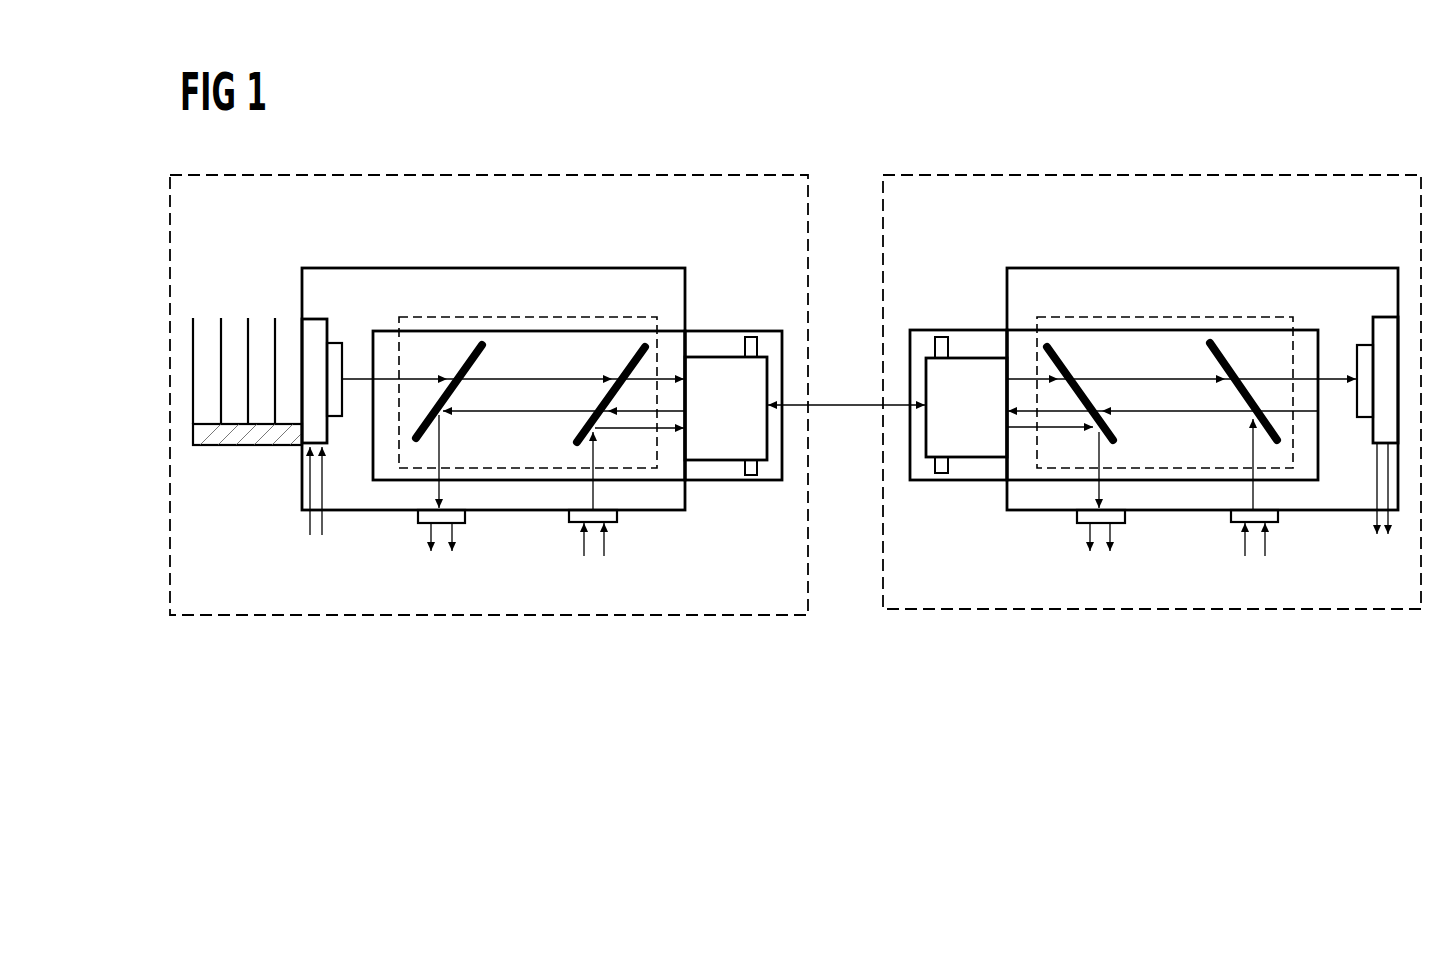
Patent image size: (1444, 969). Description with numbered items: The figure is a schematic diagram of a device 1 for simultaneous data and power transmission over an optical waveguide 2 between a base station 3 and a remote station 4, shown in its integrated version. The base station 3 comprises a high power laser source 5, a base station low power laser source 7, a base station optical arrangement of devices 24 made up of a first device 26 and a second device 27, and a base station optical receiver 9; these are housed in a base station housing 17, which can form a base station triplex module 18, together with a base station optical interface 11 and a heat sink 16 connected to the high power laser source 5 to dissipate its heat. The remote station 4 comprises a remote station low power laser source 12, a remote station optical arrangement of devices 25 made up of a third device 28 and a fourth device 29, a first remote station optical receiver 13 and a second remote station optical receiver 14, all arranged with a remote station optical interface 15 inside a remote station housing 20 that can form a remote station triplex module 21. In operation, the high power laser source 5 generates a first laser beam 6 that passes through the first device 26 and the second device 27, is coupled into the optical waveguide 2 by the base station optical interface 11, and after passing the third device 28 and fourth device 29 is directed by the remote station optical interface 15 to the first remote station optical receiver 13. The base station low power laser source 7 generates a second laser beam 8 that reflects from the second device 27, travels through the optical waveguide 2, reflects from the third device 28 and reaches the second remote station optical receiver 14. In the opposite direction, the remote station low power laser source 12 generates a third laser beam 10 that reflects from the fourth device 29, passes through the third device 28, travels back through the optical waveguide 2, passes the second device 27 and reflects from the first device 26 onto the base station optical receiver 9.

The device 1 is at (808, 116).
The optical waveguide 2 is at (842, 408).
The base station 3 is at (532, 598).
The remote station 4 is at (978, 592).
The high power laser source 5 is at (314, 319).
The first laser beam 6 is at (358, 378).
The base station low power laser source 7 is at (617, 522).
The second laser beam 8 is at (593, 487).
The base station optical receiver 9 is at (465, 523).
The third laser beam 10 is at (437, 485).
The base station optical interface 11 is at (760, 331).
The remote station low power laser source 12 is at (1280, 522).
The first remote station optical receiver 13 is at (1378, 317).
The second remote station optical receiver 14 is at (1127, 523).
The remote station optical interface 15 is at (1023, 330).
The heat sink 16 is at (228, 428).
The base station housing 17 is at (763, 415).
The base station triplex module 18 is at (390, 268).
The remote station housing 20 is at (1152, 435).
The remote station triplex module 21 is at (1117, 330).
The base station optical arrangement of devices 24 is at (532, 318).
The remote station optical arrangement of devices 25 is at (1155, 318).
The first device 26 is at (462, 350).
The second device 27 is at (622, 365).
The third device 28 is at (1066, 365).
The fourth device 29 is at (1232, 365).